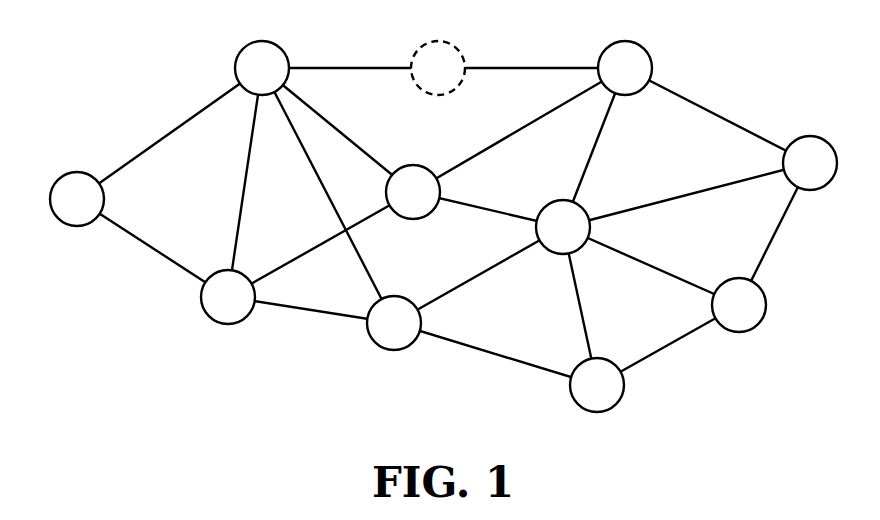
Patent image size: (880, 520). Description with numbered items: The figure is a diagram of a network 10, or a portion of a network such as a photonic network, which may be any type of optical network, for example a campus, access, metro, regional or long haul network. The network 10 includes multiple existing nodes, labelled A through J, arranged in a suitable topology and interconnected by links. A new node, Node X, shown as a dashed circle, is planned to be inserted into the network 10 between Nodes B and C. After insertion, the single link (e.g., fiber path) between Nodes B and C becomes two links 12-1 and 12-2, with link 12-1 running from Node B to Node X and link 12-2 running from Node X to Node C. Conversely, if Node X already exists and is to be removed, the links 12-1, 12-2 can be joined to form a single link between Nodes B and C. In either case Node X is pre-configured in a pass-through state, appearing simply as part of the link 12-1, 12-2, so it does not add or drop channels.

The network 10 is at (439, 231).
The link 12-1 is at (335, 67).
The link 12-2 is at (518, 66).